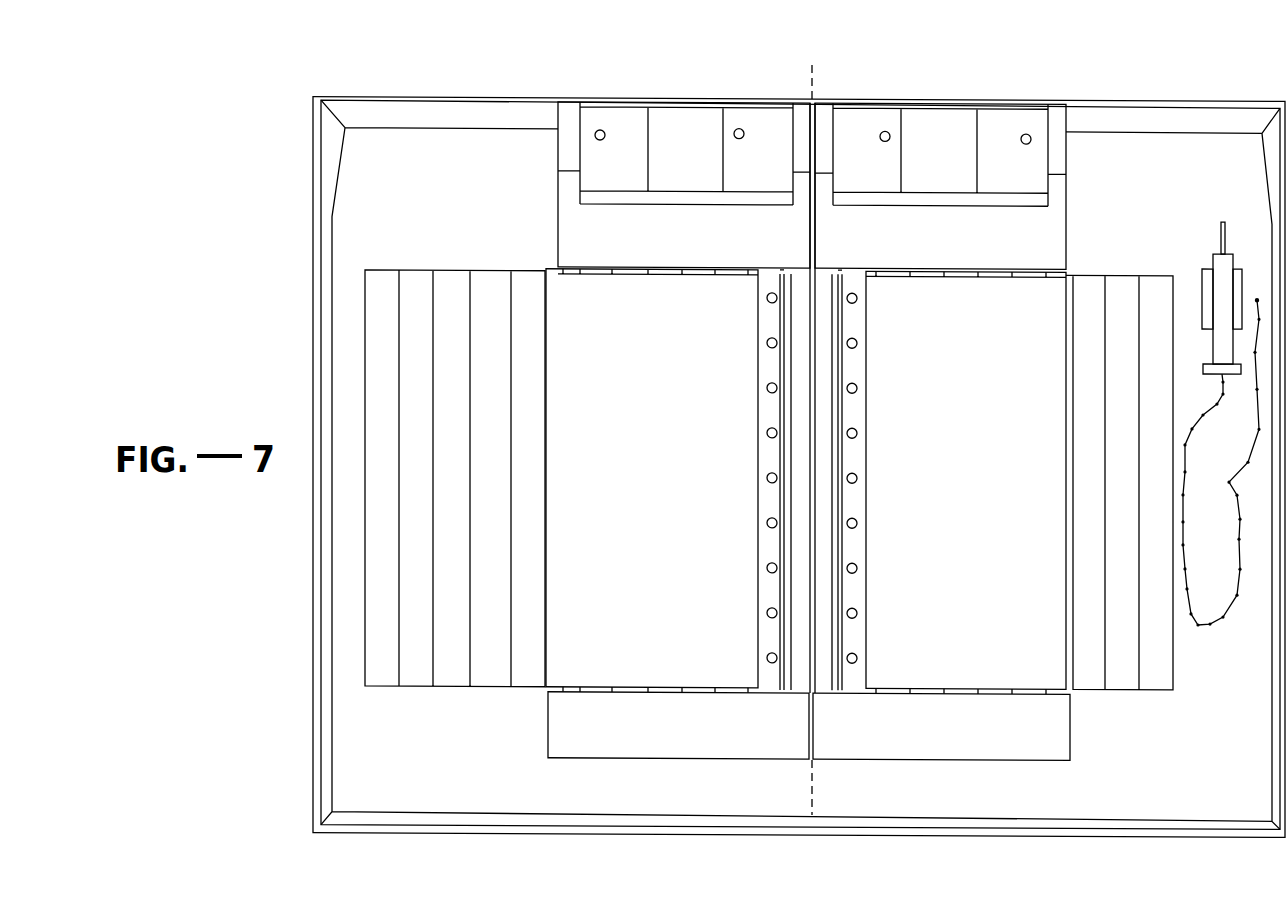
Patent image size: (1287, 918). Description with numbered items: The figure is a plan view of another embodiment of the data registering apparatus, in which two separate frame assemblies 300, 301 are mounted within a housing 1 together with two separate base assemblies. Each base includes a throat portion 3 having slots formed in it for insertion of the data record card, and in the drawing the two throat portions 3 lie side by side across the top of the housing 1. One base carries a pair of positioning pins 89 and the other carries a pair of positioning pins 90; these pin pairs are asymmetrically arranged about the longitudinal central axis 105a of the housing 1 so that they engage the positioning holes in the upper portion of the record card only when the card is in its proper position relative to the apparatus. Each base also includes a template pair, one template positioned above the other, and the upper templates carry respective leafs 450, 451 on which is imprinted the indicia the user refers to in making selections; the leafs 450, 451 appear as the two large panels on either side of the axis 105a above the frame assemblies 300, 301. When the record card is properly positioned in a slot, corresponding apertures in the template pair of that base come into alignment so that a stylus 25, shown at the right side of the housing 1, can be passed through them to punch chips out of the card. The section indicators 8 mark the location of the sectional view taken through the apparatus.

The housing 1 is at (345, 659).
The throat portion 3 is at (678, 160).
The section line 8- 8 is at (532, 480).
The stylus 25 is at (1222, 268).
The positioning pins 89 is at (595, 134).
The positioning pins 90 is at (885, 131).
The longitudinal central axis 105a is at (812, 780).
The frame assembly 300 is at (657, 742).
The frame assembly 301 is at (925, 742).
The leaf 450 is at (656, 480).
The leaf 451 is at (971, 480).